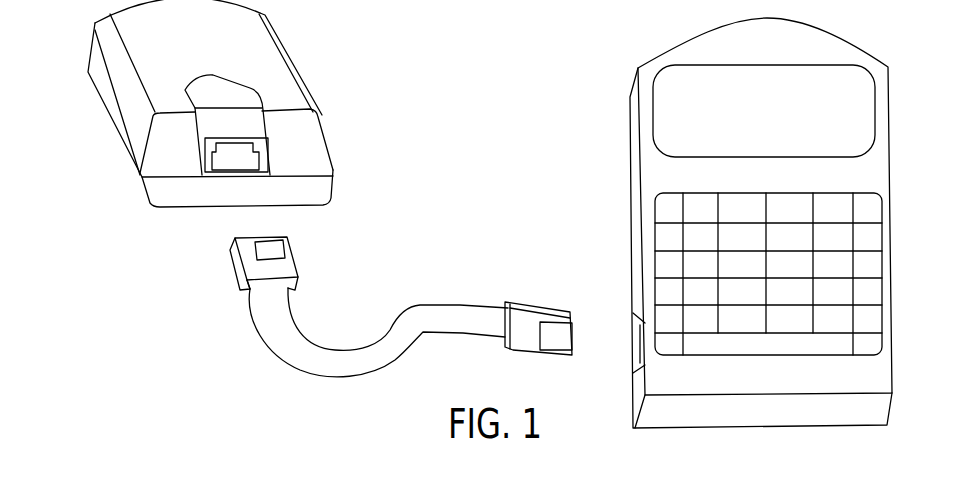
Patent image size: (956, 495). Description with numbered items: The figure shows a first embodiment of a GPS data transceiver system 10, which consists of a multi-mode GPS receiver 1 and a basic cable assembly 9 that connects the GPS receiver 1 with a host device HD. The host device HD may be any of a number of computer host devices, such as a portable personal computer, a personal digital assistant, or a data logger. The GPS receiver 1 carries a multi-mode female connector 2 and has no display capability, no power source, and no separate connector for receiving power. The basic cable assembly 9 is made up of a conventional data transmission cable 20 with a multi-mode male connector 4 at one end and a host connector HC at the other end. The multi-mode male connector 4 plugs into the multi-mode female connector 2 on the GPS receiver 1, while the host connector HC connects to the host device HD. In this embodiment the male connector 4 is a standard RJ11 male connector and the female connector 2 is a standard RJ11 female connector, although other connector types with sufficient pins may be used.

The multi-mode GPS receiver 1 is at (62, 40).
The multi-mode female connector 2 is at (253, 162).
The multi-mode male connector 4 is at (275, 273).
The basic cable assembly 9 is at (386, 306).
The GPS data transceiver system 10 is at (427, 98).
The data transmission cable 20 is at (412, 317).
The host connector HC is at (528, 322).
The host device HD is at (662, 185).